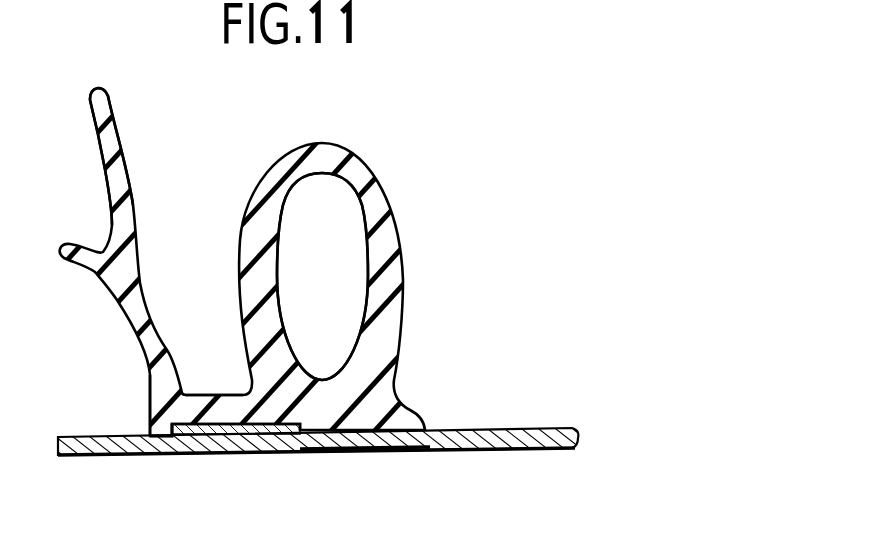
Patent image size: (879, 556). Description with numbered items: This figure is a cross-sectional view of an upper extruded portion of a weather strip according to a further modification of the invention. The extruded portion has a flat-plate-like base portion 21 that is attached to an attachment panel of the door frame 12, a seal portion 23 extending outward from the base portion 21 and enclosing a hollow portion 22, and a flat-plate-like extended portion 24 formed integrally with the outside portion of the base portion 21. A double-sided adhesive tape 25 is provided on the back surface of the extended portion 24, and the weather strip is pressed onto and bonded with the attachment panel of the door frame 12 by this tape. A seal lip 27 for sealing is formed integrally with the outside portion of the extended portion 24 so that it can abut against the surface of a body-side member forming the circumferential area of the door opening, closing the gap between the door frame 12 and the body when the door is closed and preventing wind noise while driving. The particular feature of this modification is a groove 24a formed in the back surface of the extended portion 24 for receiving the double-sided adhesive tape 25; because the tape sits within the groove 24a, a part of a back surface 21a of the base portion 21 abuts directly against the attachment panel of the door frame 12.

The door frame 12 is at (495, 428).
The base portion 21 is at (332, 452).
The back surface of the base portion 21a is at (393, 452).
The hollow portion 22 is at (290, 199).
The seal portion 23 is at (393, 208).
The extended portion 24 is at (212, 395).
The groove 24a is at (153, 422).
The double-sided adhesive tape 25 is at (245, 452).
The seal lip 27 is at (112, 112).